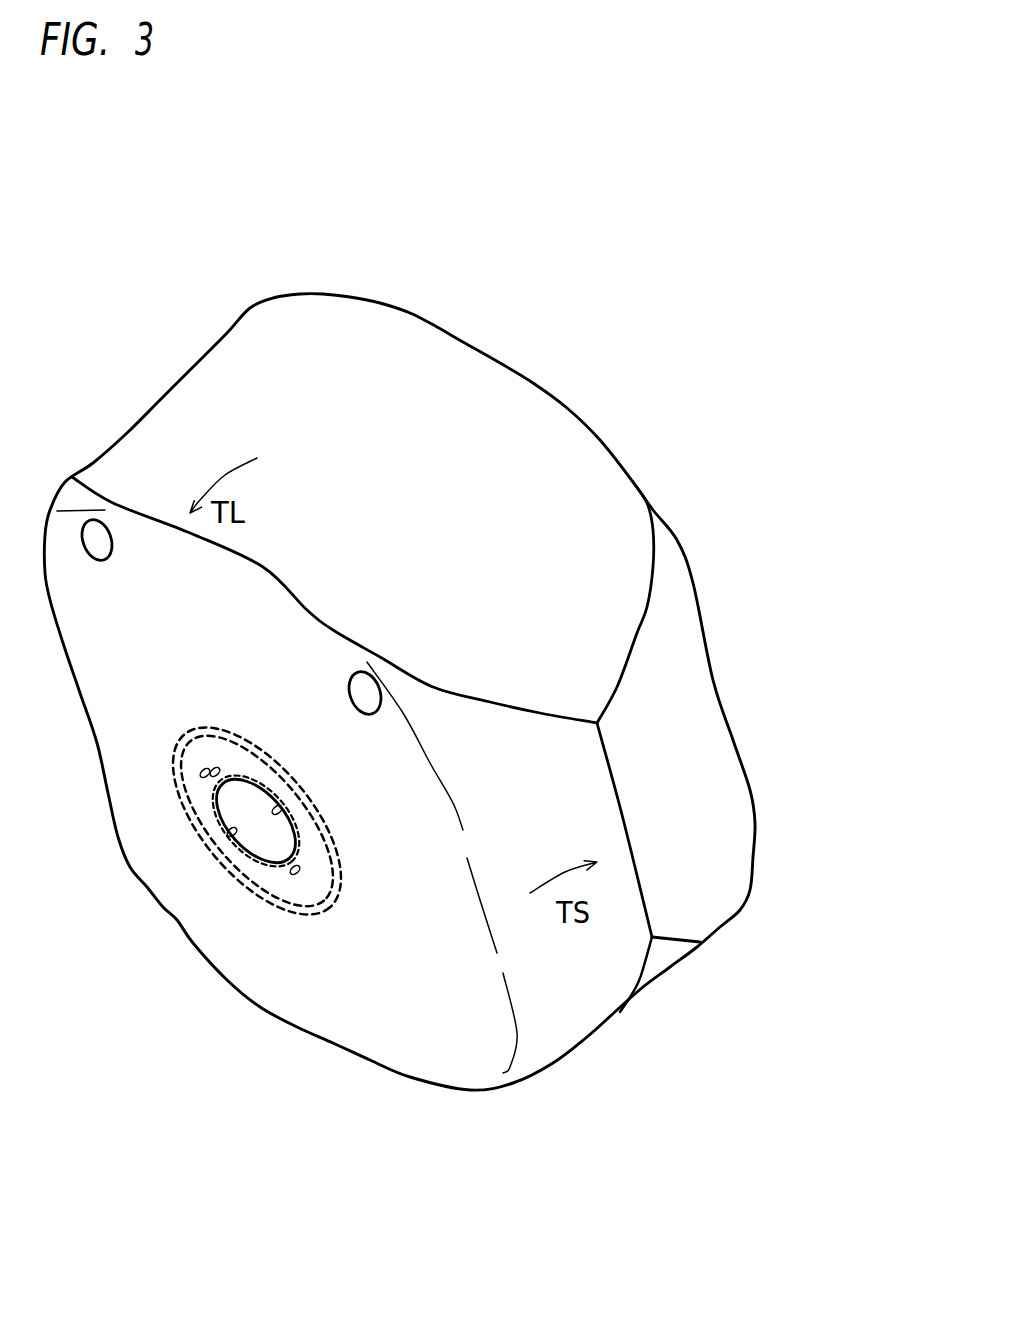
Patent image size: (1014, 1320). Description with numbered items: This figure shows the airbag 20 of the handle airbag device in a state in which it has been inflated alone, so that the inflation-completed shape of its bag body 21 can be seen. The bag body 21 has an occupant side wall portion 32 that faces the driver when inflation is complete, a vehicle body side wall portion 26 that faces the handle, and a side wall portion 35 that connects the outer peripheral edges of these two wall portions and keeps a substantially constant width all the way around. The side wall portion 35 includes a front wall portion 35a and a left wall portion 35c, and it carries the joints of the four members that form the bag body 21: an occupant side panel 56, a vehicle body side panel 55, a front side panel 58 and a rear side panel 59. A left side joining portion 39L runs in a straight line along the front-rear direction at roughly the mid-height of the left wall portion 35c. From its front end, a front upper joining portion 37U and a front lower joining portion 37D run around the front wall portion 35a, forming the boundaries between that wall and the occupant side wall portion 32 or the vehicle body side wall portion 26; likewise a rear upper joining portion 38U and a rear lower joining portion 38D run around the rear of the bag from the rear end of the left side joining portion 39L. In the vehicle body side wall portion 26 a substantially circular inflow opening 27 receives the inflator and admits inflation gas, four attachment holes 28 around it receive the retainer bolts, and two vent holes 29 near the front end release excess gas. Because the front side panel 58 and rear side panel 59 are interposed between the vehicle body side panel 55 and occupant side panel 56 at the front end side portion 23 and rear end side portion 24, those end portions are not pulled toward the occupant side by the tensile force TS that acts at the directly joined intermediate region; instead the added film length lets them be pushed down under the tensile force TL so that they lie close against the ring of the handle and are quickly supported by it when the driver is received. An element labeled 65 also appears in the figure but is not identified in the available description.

The airbag 20 is at (657, 217).
The bag body 21 is at (208, 290).
The front end side portion 23 is at (573, 393).
The rear end side portion 24 is at (378, 1077).
The vehicle body side wall portion 26 is at (247, 582).
The inflow opening 27 is at (257, 797).
The attachment holes 28 is at (215, 767).
The vent holes 29 is at (90, 522).
The occupant side wall portion 32 is at (502, 417).
The side wall portion 35 is at (678, 987).
The front wall portion 35a is at (388, 387).
The left wall portion 35c is at (717, 885).
The front lower joining portion 37D is at (293, 593).
The front upper joining portion 37U is at (643, 608).
The rear lower joining portion 38D is at (645, 968).
The rear upper joining portion 38U is at (687, 942).
The left side joining portion 39L is at (622, 805).
The vehicle body side panel 55 is at (298, 987).
The occupant side panel 56 is at (693, 687).
The front side panel 58 is at (455, 402).
The rear side panel 59 is at (663, 967).
The ridge line 65 is at (310, 638).